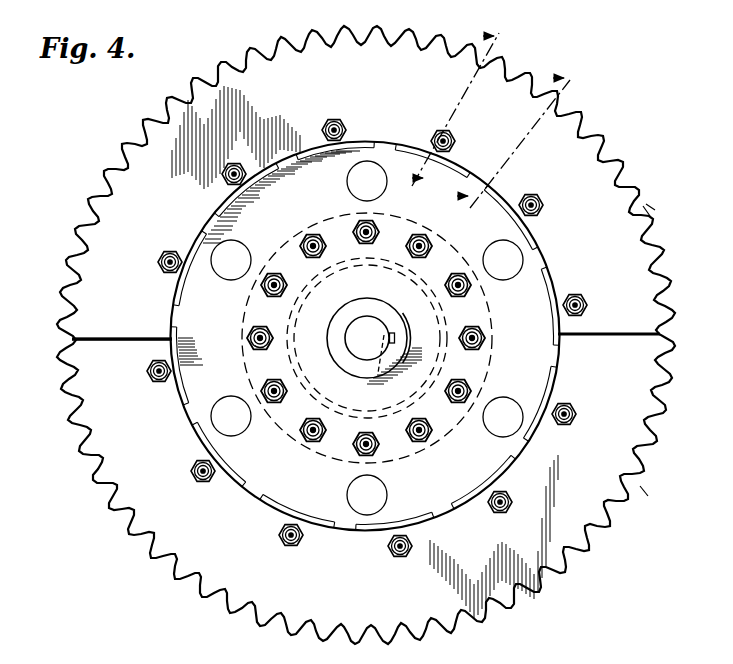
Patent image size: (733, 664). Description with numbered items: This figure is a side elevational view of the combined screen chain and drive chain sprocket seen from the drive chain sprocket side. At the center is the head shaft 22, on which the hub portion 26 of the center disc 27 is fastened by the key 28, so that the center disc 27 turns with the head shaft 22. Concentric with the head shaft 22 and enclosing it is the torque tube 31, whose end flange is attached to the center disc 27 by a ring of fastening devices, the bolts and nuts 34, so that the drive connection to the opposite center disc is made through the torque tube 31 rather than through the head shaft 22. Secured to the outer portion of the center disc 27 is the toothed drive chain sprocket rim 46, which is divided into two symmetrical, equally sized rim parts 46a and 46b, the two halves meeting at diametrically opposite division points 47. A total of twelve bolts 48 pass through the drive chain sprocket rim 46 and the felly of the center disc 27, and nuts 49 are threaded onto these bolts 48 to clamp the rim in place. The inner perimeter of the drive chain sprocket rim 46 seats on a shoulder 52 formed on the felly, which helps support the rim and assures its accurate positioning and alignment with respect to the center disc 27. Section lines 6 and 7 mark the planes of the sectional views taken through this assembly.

The section line 6- 6 is at (458, 107).
The section line 7- 7 is at (520, 149).
The head shaft 22 is at (356, 322).
The hub portion 26 is at (396, 326).
The center disc 27 is at (458, 478).
The key 28 is at (384, 372).
The torque tube 31 is at (316, 377).
The bolts and nuts 34 is at (484, 330).
The drive chain sprocket rim 46 is at (188, 588).
The rim part 46a is at (644, 212).
The rim part 46b is at (642, 492).
The division points 47 is at (73, 339).
The bolts 48 is at (334, 117).
The nuts 49 is at (237, 162).
The shoulder 52 is at (405, 146).